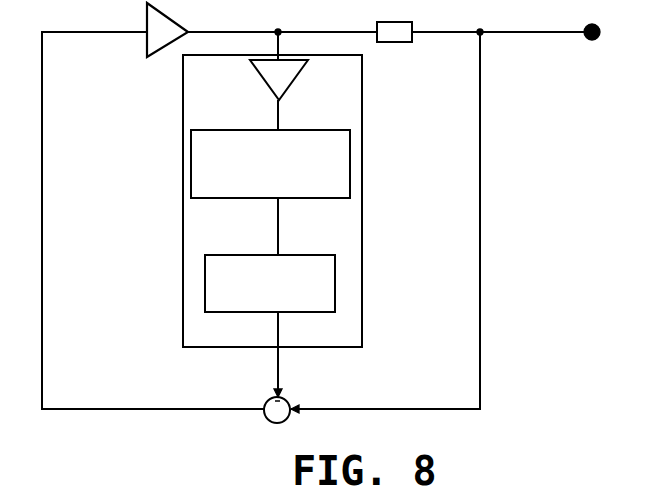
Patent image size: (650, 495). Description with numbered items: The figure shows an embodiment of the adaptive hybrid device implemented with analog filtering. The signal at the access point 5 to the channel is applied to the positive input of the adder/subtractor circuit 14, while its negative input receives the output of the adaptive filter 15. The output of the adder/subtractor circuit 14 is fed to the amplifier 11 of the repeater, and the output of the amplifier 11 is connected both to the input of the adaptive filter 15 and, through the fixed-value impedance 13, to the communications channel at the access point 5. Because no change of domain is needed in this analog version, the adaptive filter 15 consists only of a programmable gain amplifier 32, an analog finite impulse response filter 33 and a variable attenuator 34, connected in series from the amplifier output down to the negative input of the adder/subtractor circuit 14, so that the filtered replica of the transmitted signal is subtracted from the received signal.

The amplifier 11 is at (167, 30).
The fixed-value impedance 13 is at (394, 21).
The access point 5 is at (601, 32).
The adaptive filter 15 is at (257, 201).
The programmable gain amplifier 32 is at (279, 80).
The analog finite impulse response filter 33 is at (270, 164).
The variable attenuator 34 is at (270, 283).
The adder/subtractor circuit 14 is at (263, 401).